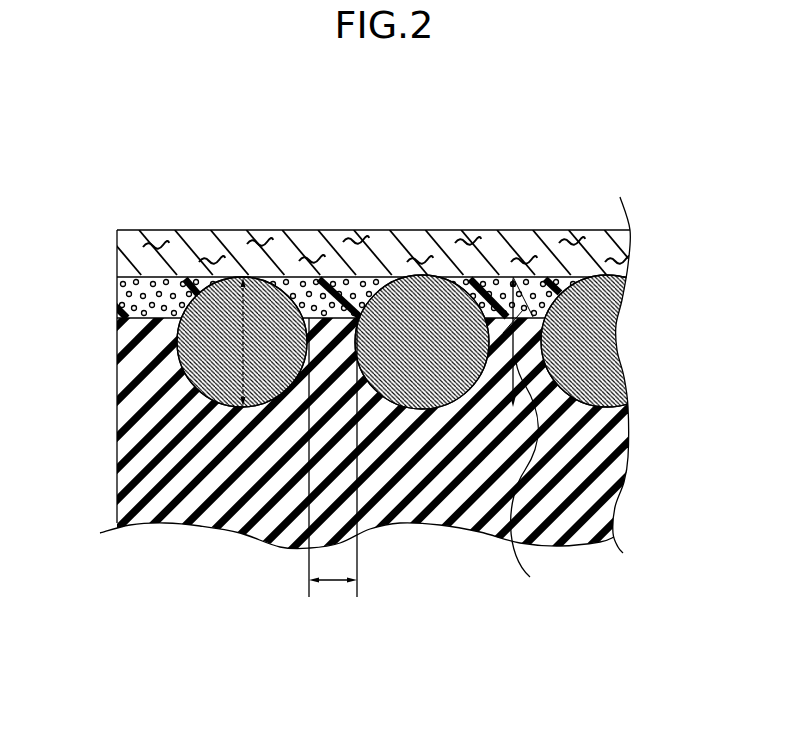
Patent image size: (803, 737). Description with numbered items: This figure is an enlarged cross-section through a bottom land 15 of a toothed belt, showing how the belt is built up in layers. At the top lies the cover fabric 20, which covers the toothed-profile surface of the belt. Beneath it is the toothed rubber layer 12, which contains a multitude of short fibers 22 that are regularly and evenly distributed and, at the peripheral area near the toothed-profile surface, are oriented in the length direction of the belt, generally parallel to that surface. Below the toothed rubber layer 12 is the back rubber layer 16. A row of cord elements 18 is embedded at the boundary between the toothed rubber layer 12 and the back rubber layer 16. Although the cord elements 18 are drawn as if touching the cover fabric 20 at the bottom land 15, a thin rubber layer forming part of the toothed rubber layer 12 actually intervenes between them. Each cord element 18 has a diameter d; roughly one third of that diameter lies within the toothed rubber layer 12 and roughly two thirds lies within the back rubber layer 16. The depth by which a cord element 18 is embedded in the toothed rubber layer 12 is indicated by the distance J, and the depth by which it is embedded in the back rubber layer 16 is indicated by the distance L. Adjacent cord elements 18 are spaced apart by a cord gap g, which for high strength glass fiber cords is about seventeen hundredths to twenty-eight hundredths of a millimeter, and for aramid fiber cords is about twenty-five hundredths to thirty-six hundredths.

The bottom land 15 is at (238, 226).
The toothed rubber layer 12 is at (344, 282).
The back rubber layer 16 is at (593, 484).
The cord elements 18 is at (188, 357).
The cover fabric 20 is at (581, 248).
The short fibers 22 is at (122, 284).
The diameter of the cord element d is at (255, 342).
The cord gap g is at (333, 470).
The embedding depth in the toothed rubber layer J is at (510, 292).
The embedding depth in the back rubber layer L is at (530, 485).